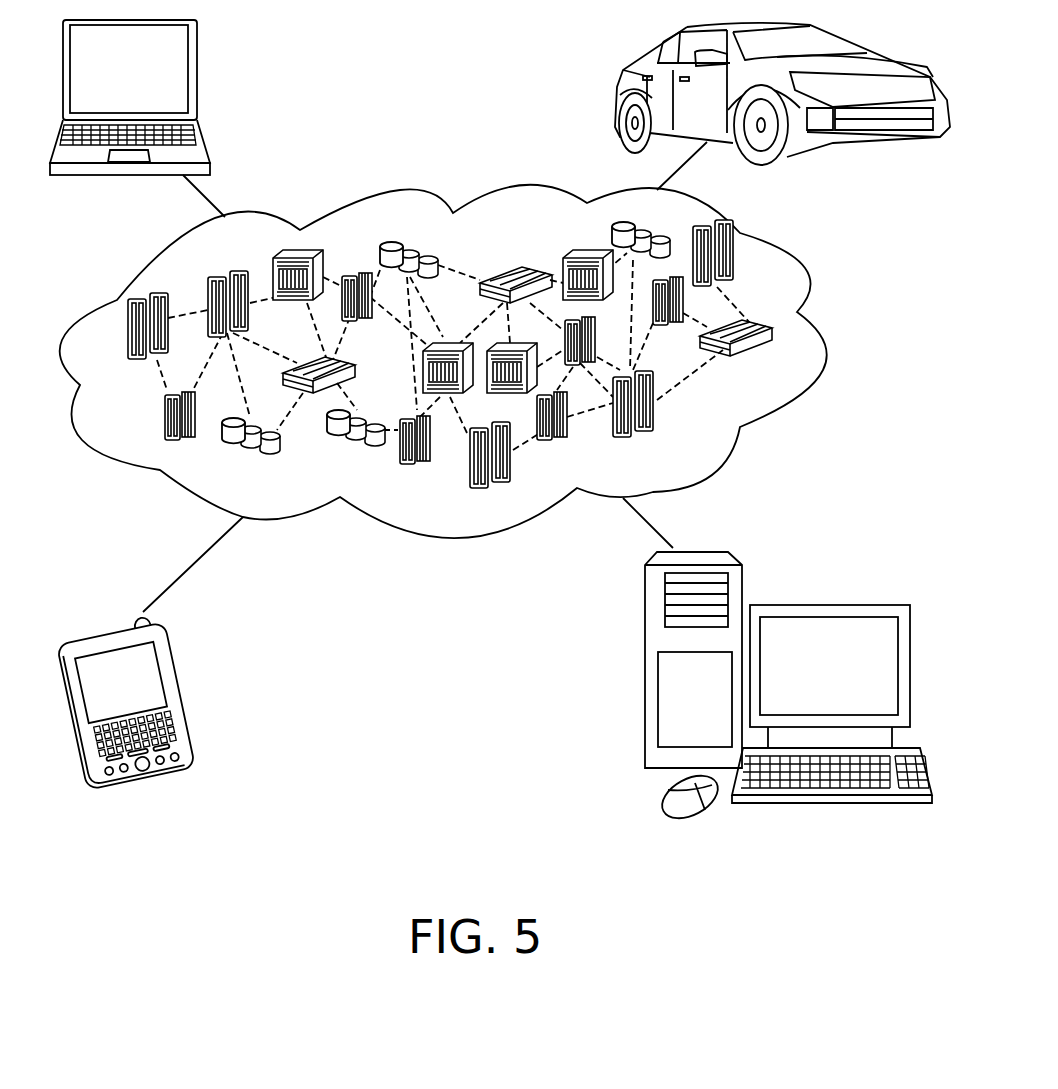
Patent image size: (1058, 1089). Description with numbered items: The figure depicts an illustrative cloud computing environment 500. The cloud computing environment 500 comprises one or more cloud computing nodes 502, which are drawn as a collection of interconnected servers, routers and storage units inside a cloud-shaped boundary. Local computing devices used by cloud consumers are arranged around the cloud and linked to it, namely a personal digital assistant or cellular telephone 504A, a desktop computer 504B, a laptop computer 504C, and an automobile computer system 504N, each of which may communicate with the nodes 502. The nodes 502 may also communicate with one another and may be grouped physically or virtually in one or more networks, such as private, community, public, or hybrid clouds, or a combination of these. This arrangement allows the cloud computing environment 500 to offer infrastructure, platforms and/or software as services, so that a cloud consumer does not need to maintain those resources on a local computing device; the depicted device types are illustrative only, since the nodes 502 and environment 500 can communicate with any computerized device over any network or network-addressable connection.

The cloud computing environment 500 is at (782, 330).
The cloud computing nodes 502 is at (775, 362).
The personal digital assistant (PDA) or cellular telephone 504A is at (175, 658).
The desktop computer 504B is at (816, 605).
The laptop computer 504C is at (196, 52).
The automobile computer system 504N is at (618, 93).